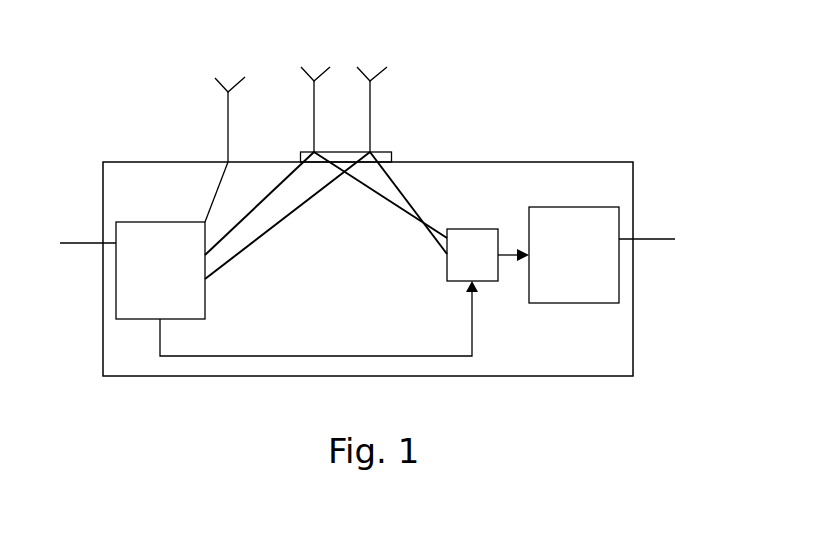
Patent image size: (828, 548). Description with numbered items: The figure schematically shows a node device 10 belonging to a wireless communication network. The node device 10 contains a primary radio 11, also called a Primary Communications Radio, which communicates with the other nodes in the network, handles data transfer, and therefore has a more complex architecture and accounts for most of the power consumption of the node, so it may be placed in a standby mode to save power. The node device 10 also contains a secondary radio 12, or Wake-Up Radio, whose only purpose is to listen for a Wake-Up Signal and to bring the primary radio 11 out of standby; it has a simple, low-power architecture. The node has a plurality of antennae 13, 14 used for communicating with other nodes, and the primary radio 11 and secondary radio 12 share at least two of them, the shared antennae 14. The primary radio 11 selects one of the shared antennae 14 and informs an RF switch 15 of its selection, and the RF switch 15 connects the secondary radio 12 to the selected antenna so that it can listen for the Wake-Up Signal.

The node device 10 is at (616, 155).
The primary radio 11 is at (117, 270).
The secondary radio 12 is at (621, 255).
The antenna 13 is at (223, 73).
The shared antennae 14 is at (378, 60).
The RF switch 15 is at (461, 227).